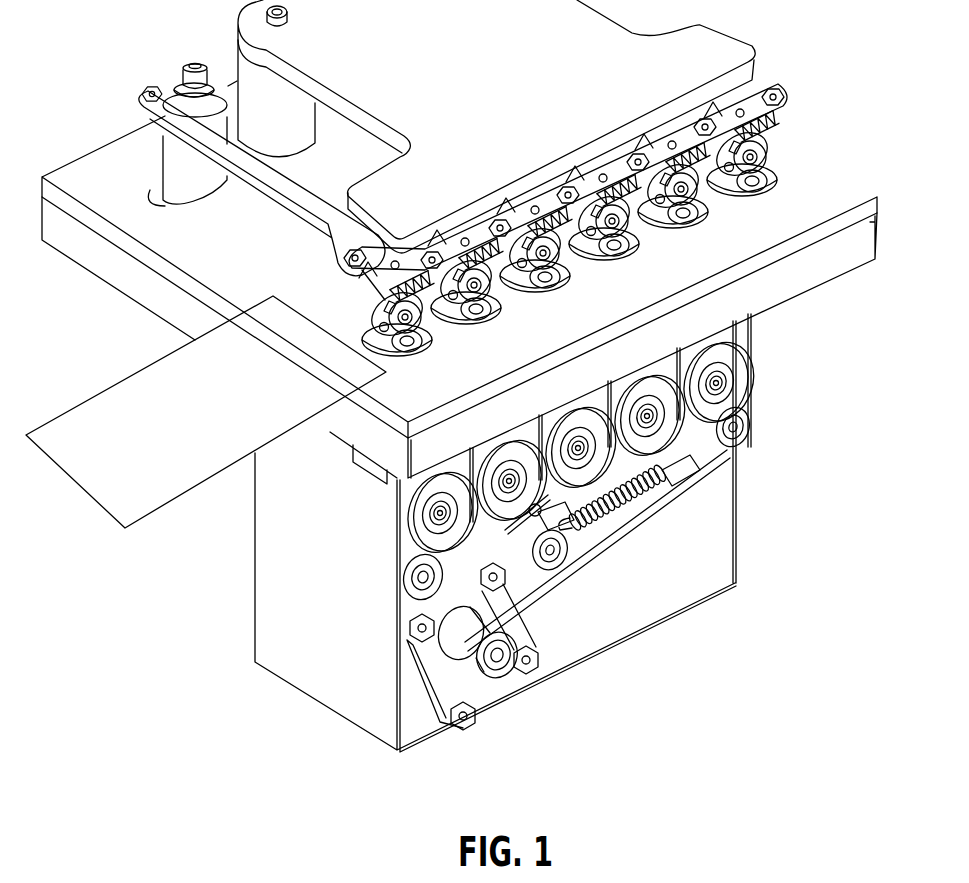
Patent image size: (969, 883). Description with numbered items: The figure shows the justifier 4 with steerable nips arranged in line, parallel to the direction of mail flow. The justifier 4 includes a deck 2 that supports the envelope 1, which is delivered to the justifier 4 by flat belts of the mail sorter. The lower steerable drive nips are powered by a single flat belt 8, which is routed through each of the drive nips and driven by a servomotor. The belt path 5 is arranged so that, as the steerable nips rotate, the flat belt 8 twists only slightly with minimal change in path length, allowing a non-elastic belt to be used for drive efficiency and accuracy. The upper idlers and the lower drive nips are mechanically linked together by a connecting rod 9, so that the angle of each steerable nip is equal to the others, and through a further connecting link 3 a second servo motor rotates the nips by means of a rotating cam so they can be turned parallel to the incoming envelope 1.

The envelope 1 is at (113, 393).
The deck 2 is at (822, 193).
The connecting link 3 is at (200, 150).
The justifier 4 is at (819, 127).
The belt path 5 is at (688, 524).
The flat belt 8 is at (617, 540).
The connecting rod 9 is at (793, 107).